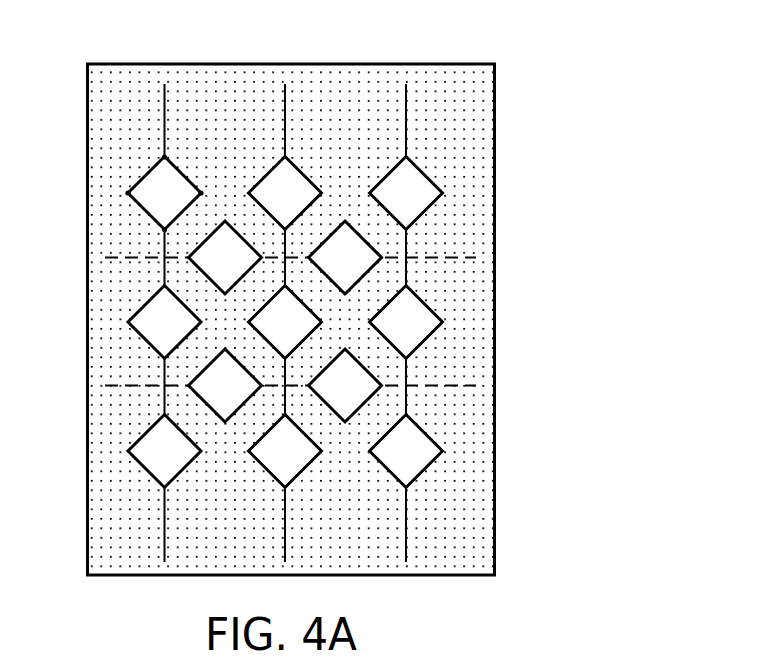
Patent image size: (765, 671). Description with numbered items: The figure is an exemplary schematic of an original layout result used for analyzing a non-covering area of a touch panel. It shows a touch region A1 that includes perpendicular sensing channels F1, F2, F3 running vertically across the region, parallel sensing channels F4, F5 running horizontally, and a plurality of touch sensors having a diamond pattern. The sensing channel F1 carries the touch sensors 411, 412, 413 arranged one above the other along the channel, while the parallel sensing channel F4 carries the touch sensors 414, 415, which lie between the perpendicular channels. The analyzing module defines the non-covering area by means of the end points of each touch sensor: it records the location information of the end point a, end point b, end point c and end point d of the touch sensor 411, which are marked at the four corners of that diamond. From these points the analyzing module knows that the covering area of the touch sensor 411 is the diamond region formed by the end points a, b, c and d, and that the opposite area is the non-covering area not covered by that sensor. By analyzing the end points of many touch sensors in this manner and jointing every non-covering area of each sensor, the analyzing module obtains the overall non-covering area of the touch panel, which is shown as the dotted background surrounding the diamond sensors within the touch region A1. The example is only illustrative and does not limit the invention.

The touch region A1 is at (495, 97).
The sensing channel F1 is at (165, 110).
The sensing channel F2 is at (285, 108).
The sensing channel F3 is at (406, 110).
The sensing channel F4 is at (125, 262).
The sensing channel F5 is at (125, 390).
The touch sensor 411 is at (180, 170).
The touch sensor 412 is at (148, 346).
The touch sensor 413 is at (148, 475).
The touch sensor 414 is at (237, 228).
The touch sensor 415 is at (360, 227).
The end point a is at (163, 231).
The end point b is at (201, 193).
The end point c is at (127, 193).
The end point d is at (163, 156).